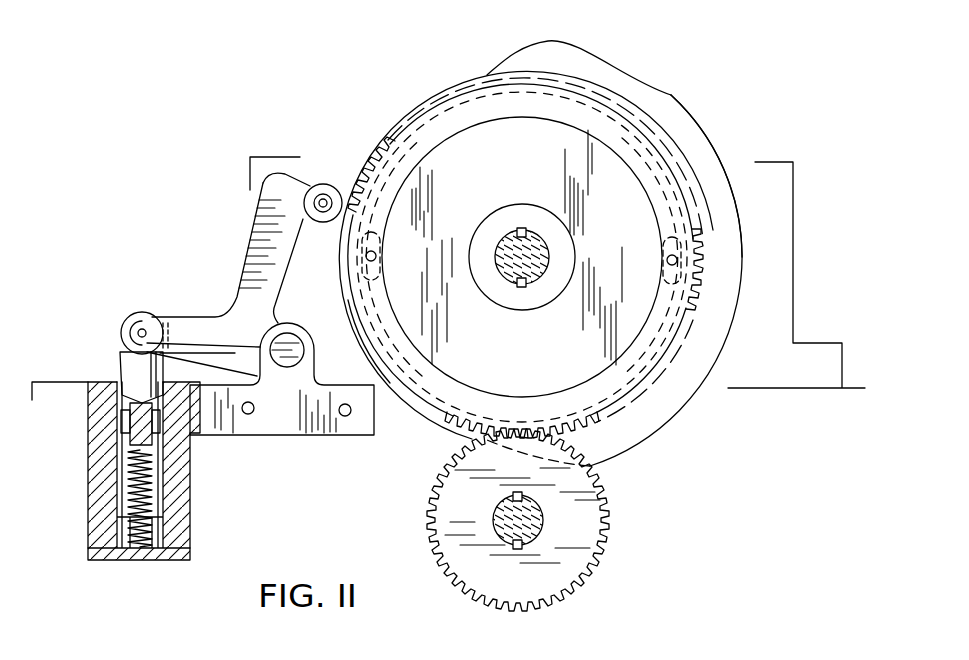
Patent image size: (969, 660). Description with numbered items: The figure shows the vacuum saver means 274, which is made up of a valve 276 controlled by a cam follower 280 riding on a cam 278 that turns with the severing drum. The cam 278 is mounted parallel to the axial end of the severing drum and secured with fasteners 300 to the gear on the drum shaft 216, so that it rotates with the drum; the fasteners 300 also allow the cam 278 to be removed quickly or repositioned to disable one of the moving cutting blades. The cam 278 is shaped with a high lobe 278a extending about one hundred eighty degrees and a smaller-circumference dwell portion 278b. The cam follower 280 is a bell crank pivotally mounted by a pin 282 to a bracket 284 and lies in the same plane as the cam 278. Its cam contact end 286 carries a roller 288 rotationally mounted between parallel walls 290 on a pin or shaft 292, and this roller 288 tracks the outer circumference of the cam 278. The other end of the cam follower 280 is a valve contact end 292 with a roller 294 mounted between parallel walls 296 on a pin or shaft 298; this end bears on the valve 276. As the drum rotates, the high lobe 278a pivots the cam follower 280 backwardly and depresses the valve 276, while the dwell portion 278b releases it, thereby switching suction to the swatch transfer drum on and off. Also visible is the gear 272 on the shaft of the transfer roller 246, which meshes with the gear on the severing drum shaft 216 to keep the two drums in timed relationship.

The shaft 216 is at (543, 233).
The transfer roller 246 is at (527, 527).
The gear 272 is at (593, 528).
The vacuum saver means 274 is at (262, 104).
The valve 276 is at (130, 371).
The cam 278 is at (612, 68).
The high lobe 278a is at (687, 110).
The dwell portion 278b is at (403, 400).
The cam follower 280 is at (253, 233).
The pin 282 is at (298, 326).
The bracket 284 is at (275, 436).
The cam contact end 286 is at (322, 166).
The roller 288 is at (336, 184).
The parallel walls 290 is at (287, 261).
The pin or shaft 292 is at (320, 203).
The roller 294 is at (133, 313).
The parallel walls 296 is at (146, 316).
The pin or shaft 298 is at (135, 333).
The fasteners 300 is at (378, 256).